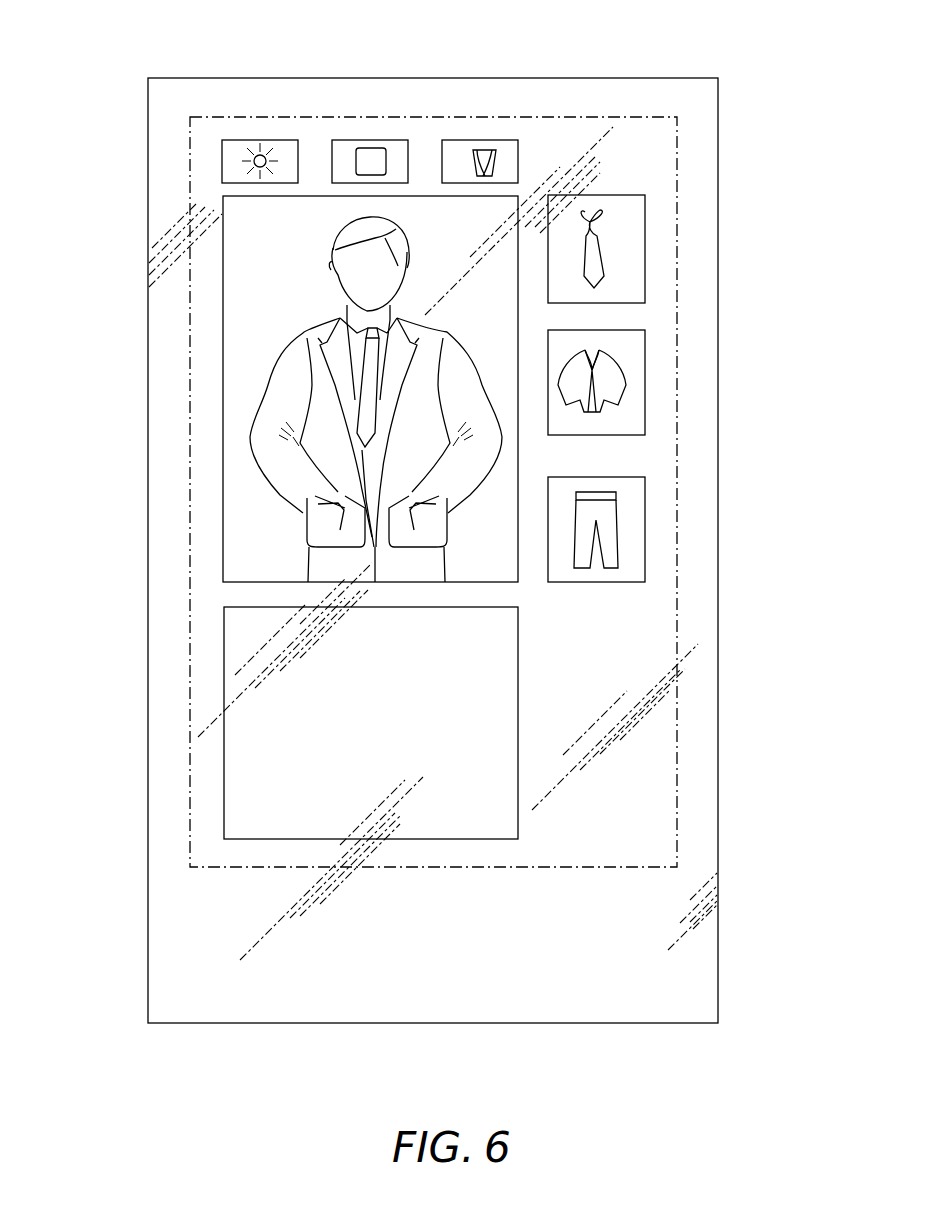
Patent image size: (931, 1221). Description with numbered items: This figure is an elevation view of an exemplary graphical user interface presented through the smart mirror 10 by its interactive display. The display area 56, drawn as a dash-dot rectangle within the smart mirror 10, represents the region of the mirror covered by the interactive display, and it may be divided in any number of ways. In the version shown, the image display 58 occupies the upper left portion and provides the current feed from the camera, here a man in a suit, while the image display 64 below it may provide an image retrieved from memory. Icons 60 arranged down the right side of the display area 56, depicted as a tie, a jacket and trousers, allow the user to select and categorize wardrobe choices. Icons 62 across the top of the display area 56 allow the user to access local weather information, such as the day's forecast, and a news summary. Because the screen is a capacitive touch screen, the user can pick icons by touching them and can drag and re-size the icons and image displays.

The smart mirror 10 is at (253, 970).
The display area 56 is at (683, 838).
The image display 58 is at (262, 532).
The icons 60 is at (630, 248).
The icons 62 is at (287, 147).
The image display 64 is at (253, 785).